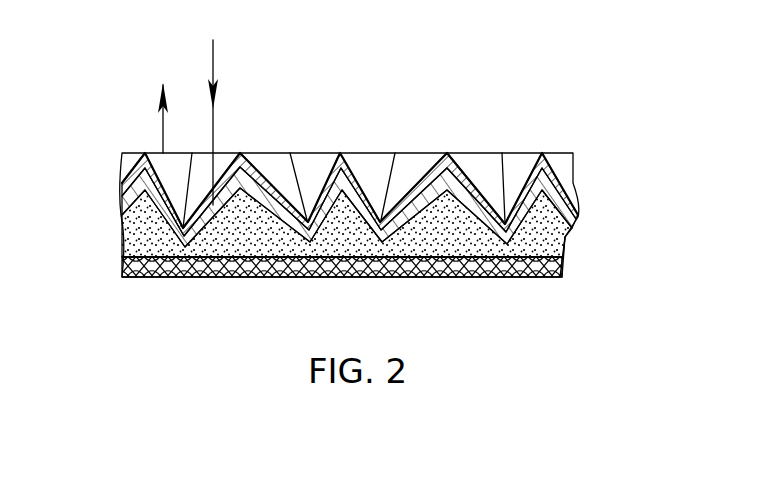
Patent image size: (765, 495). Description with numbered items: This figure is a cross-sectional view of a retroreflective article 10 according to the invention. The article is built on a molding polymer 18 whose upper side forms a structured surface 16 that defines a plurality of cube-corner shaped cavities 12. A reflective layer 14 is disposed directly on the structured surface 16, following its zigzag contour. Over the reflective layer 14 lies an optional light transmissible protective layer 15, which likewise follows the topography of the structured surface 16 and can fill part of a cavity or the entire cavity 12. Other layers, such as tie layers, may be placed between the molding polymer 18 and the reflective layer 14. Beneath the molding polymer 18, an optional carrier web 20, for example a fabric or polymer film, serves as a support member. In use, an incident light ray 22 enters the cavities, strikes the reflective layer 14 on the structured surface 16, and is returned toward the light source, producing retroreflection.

The retroreflective article 10 is at (535, 104).
The cube-corner shaped cavities 12 is at (472, 157).
The reflective layer 14 is at (125, 188).
The light transmissible protective layer 15 is at (560, 188).
The structured surface 16 is at (165, 227).
The molding polymer 18 is at (555, 242).
The carrier web 20 is at (250, 268).
The incident light ray 22 is at (213, 57).